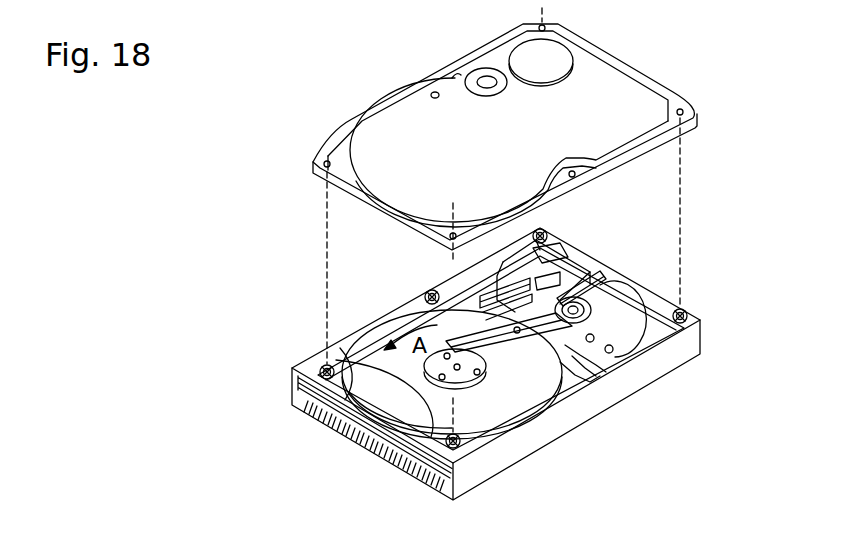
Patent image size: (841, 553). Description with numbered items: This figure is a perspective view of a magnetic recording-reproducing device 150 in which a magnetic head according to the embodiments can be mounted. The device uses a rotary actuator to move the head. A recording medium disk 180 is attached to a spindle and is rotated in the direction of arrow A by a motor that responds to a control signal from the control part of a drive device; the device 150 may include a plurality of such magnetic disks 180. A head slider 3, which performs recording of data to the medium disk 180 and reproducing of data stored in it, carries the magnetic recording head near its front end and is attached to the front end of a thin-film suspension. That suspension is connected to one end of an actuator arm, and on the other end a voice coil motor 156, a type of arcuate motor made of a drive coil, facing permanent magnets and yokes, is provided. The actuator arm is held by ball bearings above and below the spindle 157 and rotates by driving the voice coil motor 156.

The magnetic recording-reproducing device 150 is at (411, 68).
The voice coil motor 156 is at (622, 339).
The spindle 157 is at (617, 283).
The recording medium disk 180 is at (377, 347).
The head slider 3 is at (453, 347).